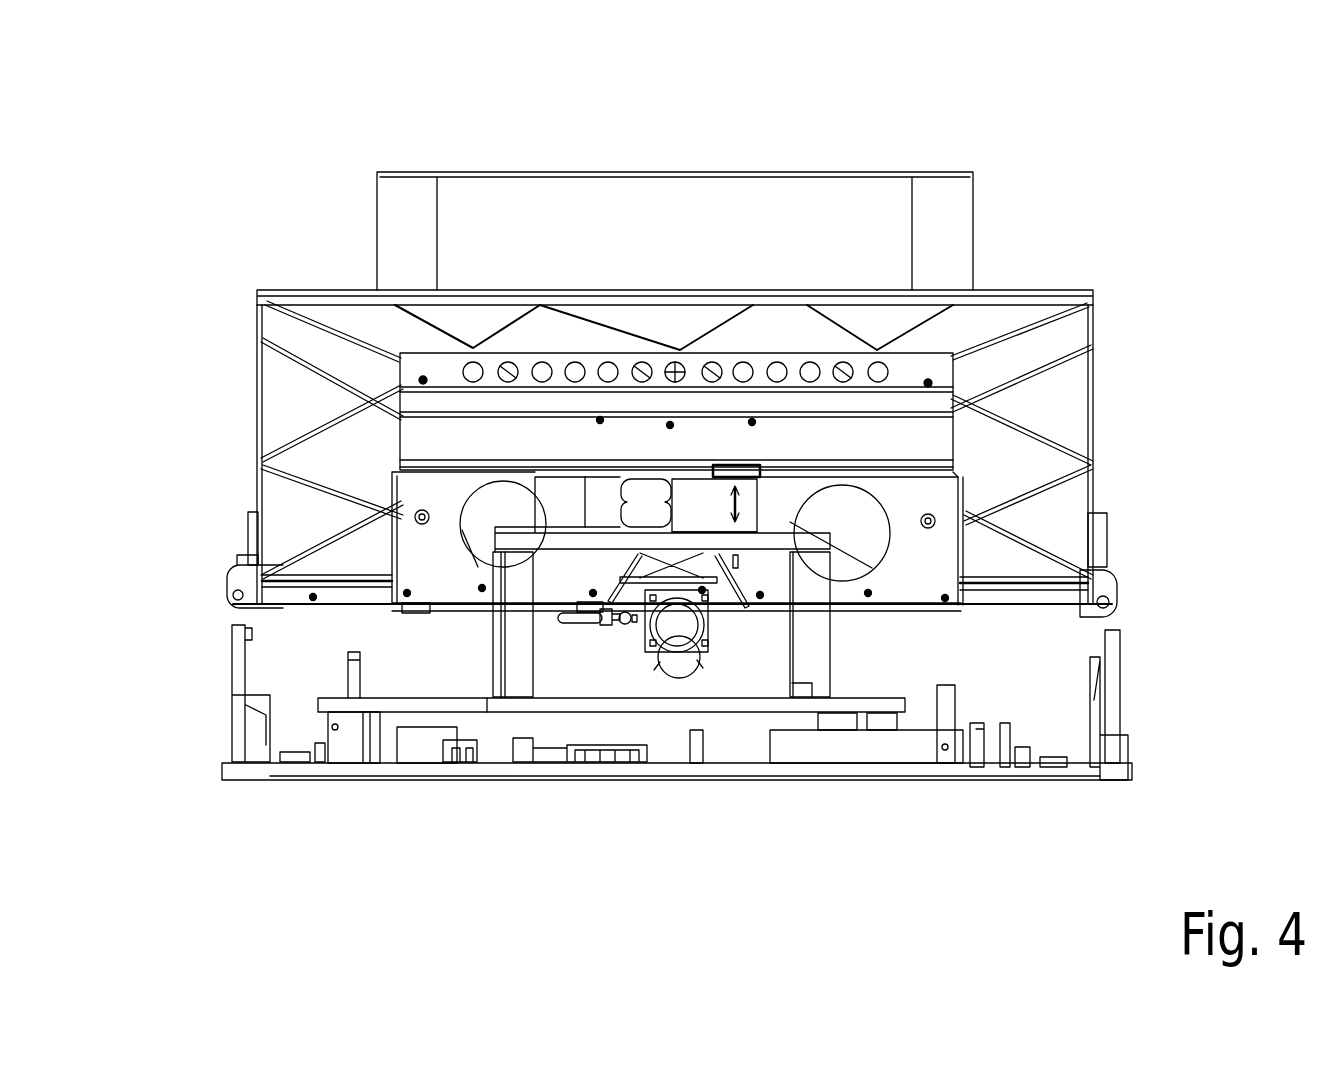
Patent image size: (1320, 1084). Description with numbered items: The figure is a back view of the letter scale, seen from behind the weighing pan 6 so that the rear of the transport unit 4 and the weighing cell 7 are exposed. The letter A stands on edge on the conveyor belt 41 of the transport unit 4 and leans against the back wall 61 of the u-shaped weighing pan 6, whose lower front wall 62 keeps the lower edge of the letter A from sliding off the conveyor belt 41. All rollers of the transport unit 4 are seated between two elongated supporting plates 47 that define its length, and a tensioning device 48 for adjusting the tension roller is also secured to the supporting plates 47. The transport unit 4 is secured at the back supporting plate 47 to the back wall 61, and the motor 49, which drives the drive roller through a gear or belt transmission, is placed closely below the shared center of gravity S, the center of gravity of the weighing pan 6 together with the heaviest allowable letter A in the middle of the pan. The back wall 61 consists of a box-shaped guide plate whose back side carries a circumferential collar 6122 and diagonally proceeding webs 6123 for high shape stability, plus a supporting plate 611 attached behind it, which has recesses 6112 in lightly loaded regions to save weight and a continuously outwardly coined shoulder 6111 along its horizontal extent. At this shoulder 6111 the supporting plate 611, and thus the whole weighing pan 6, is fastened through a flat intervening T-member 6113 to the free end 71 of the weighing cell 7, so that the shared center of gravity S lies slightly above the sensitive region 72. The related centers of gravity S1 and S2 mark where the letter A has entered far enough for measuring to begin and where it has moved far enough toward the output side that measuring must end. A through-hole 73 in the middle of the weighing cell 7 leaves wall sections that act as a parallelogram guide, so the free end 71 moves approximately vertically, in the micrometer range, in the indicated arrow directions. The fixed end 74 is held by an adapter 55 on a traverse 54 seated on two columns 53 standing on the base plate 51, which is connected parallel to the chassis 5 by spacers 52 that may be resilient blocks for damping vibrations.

The letter A is at (668, 170).
The transport unit 4 is at (706, 560).
The conveyor belt 41 is at (1117, 585).
The supporting plates 47 is at (1040, 600).
The tensioning device 48 is at (593, 622).
The motor 49 is at (676, 660).
The chassis 5 is at (1035, 780).
The base plate 51 is at (730, 712).
The spacers 52 is at (363, 717).
The columns 53 is at (813, 638).
The traverse 54 is at (587, 537).
The adapter 55 is at (508, 524).
The weighing pan 6 is at (718, 385).
The back wall 61 is at (1093, 300).
The supporting plate 611 is at (432, 567).
The shoulder 6111 is at (917, 445).
The recesses 6112 is at (878, 372).
The T-member 6113 is at (812, 346).
The circumferential collar 6122 is at (1090, 447).
The webs 6123 is at (1072, 362).
The front wall 62 is at (1107, 522).
The weighing cell 7 is at (557, 485).
The free end 71 is at (728, 474).
The sensitive region 72 is at (657, 482).
The through-hole 73 is at (587, 495).
The fixed end 74 is at (553, 498).
The shared center of gravity S is at (670, 425).
The shared center of gravity S1 is at (752, 422).
The shared center of gravity S2 is at (600, 420).